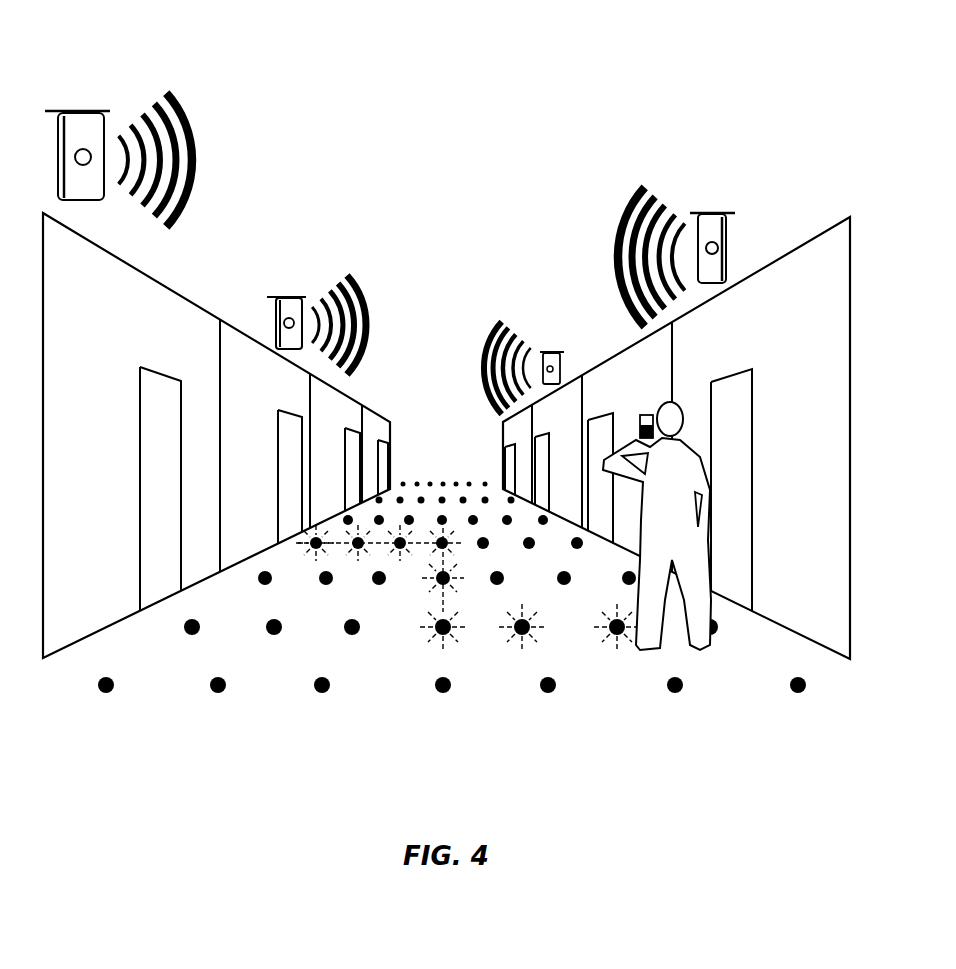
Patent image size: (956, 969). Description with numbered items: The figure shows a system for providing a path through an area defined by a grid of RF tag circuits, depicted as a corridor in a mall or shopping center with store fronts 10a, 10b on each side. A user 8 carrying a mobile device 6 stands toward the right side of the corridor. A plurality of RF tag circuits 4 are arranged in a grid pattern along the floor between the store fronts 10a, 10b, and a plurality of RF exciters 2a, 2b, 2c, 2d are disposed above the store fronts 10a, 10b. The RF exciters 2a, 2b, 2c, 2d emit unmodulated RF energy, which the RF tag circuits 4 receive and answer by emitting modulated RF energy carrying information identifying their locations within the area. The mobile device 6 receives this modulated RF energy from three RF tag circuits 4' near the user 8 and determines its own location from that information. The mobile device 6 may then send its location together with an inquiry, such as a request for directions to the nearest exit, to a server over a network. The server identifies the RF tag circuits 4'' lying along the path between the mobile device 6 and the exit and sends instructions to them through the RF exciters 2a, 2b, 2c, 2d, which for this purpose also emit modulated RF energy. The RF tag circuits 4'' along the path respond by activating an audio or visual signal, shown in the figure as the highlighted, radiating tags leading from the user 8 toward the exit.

The RF exciter 2a is at (90, 111).
The RF exciter 2b is at (293, 297).
The RF exciter 2c is at (552, 352).
The RF exciter 2d is at (715, 212).
The RF tag circuits 4 is at (452, 650).
The RF tag circuits along the path 4'' is at (420, 666).
The RF tag circuits near the mobile device 4' is at (633, 713).
The mobile device 6 is at (645, 415).
The user 8 is at (657, 526).
The store front 10a is at (216, 435).
The store front 10b is at (676, 438).